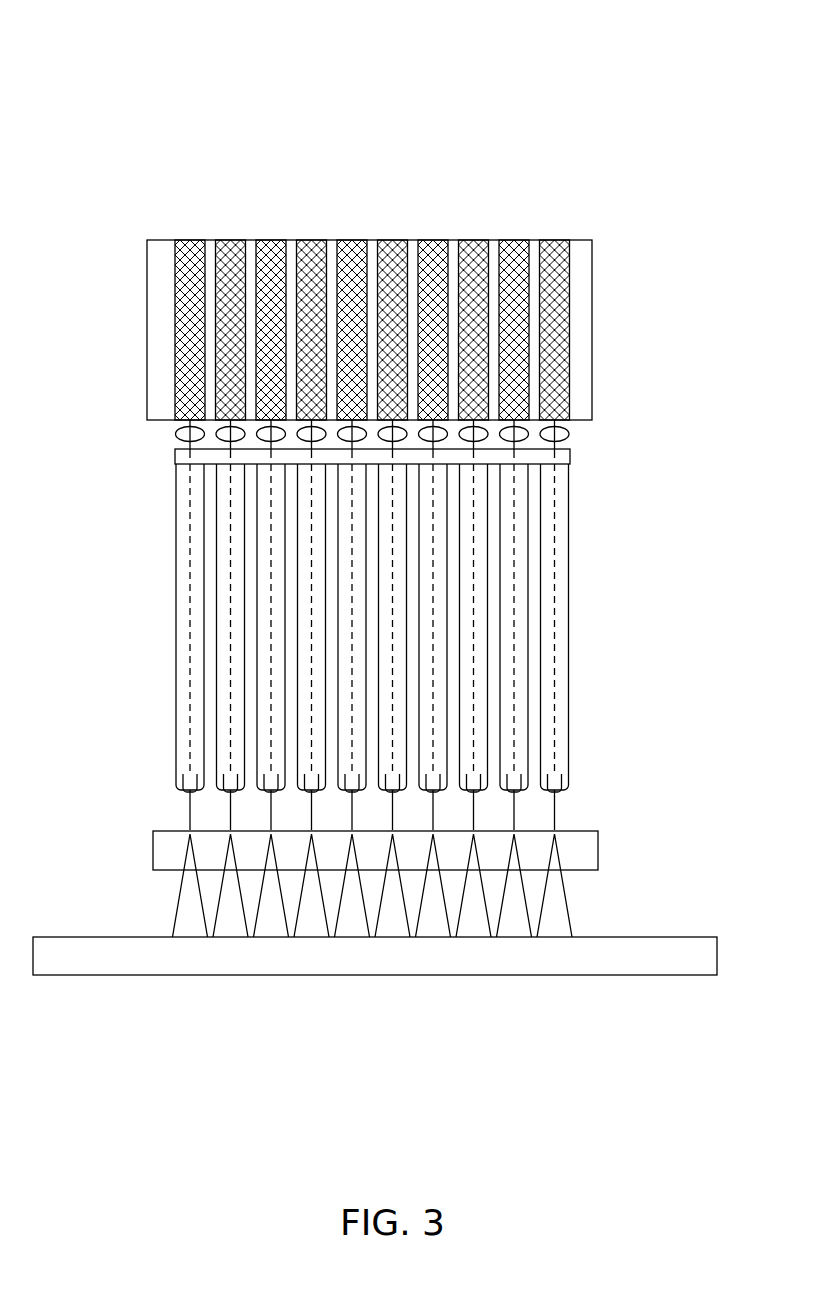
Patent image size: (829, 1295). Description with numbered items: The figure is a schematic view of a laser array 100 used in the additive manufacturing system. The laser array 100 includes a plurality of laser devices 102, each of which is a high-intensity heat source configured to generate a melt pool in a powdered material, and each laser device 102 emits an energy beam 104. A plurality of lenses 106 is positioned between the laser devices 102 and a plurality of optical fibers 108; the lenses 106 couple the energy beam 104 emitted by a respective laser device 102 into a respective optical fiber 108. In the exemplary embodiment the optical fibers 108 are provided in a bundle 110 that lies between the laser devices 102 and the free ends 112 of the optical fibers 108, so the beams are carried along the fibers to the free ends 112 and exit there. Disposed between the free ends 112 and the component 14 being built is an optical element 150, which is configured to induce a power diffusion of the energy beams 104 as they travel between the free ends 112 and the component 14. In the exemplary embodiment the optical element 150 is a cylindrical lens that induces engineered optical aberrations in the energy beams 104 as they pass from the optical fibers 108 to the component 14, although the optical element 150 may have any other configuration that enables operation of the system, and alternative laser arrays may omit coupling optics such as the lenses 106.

The laser array 100 is at (622, 65).
The laser devices 102 is at (510, 240).
The energy beam 104 is at (545, 446).
The lenses 106 is at (177, 443).
The optical fibers 108 is at (270, 563).
The bundle 110 is at (168, 459).
The free ends 112 is at (177, 809).
The optical element 150 is at (598, 848).
The component 14 is at (717, 956).